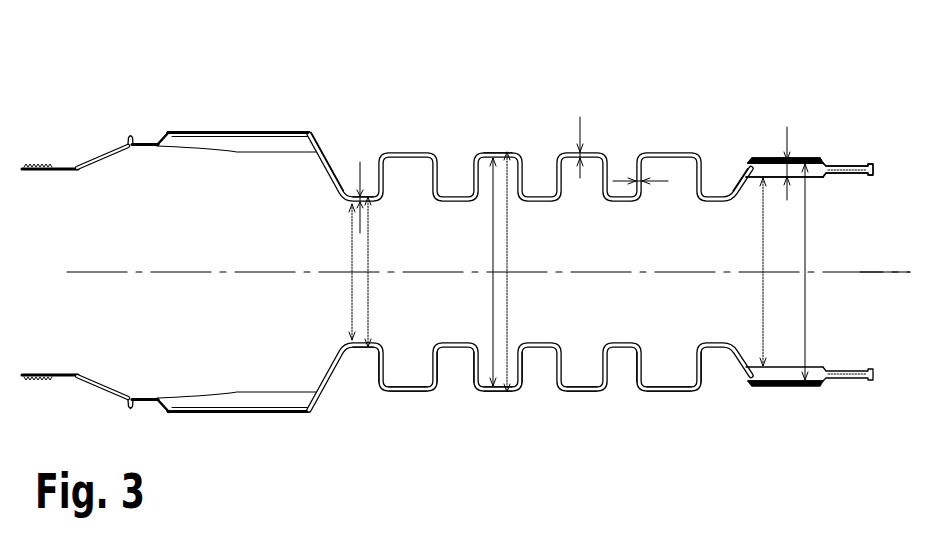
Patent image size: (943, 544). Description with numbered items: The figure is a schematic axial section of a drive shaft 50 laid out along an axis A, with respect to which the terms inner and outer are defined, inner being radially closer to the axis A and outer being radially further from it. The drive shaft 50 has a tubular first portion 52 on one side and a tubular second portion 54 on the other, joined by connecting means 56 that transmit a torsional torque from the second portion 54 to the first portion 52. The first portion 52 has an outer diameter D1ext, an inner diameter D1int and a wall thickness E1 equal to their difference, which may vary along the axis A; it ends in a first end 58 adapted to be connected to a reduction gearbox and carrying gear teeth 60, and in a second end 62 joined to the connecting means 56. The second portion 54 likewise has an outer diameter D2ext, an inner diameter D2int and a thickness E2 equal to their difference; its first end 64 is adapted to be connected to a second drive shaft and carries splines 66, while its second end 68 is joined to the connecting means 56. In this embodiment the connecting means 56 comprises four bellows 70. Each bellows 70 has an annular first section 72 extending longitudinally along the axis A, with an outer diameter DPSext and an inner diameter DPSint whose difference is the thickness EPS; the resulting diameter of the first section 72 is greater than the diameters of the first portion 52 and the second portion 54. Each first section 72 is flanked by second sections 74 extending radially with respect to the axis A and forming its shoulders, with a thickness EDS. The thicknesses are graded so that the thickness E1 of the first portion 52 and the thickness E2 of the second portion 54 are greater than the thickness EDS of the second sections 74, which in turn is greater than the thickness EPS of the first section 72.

The drive shaft 50 is at (696, 113).
The first portion 52 is at (352, 365).
The second portion 54 is at (830, 148).
The connecting means 56 is at (478, 146).
The first end 58 is at (340, 160).
The gear teeth 60 is at (229, 127).
The second end 62 is at (371, 190).
The first end 64 is at (823, 158).
The splines 66 is at (805, 152).
The second end 68 is at (725, 172).
The bellows 70 is at (376, 415).
The first section 72 is at (395, 380).
The second sections 74 is at (392, 358).
The axis A is at (898, 276).
The thickness of the first portion E1 is at (360, 162).
The thickness of the second portion E2 is at (787, 127).
The thickness of the first section EPS is at (580, 117).
The thickness of the second sections EDS is at (633, 178).
The first inner diameter D1int is at (352, 255).
The first outer diameter D1ext is at (370, 226).
The inner diameter of the first section DPSint is at (492, 252).
The outer diameter of the first section DPSext is at (508, 224).
The second inner diameter D2int is at (762, 228).
The second outer diameter D2ext is at (806, 226).